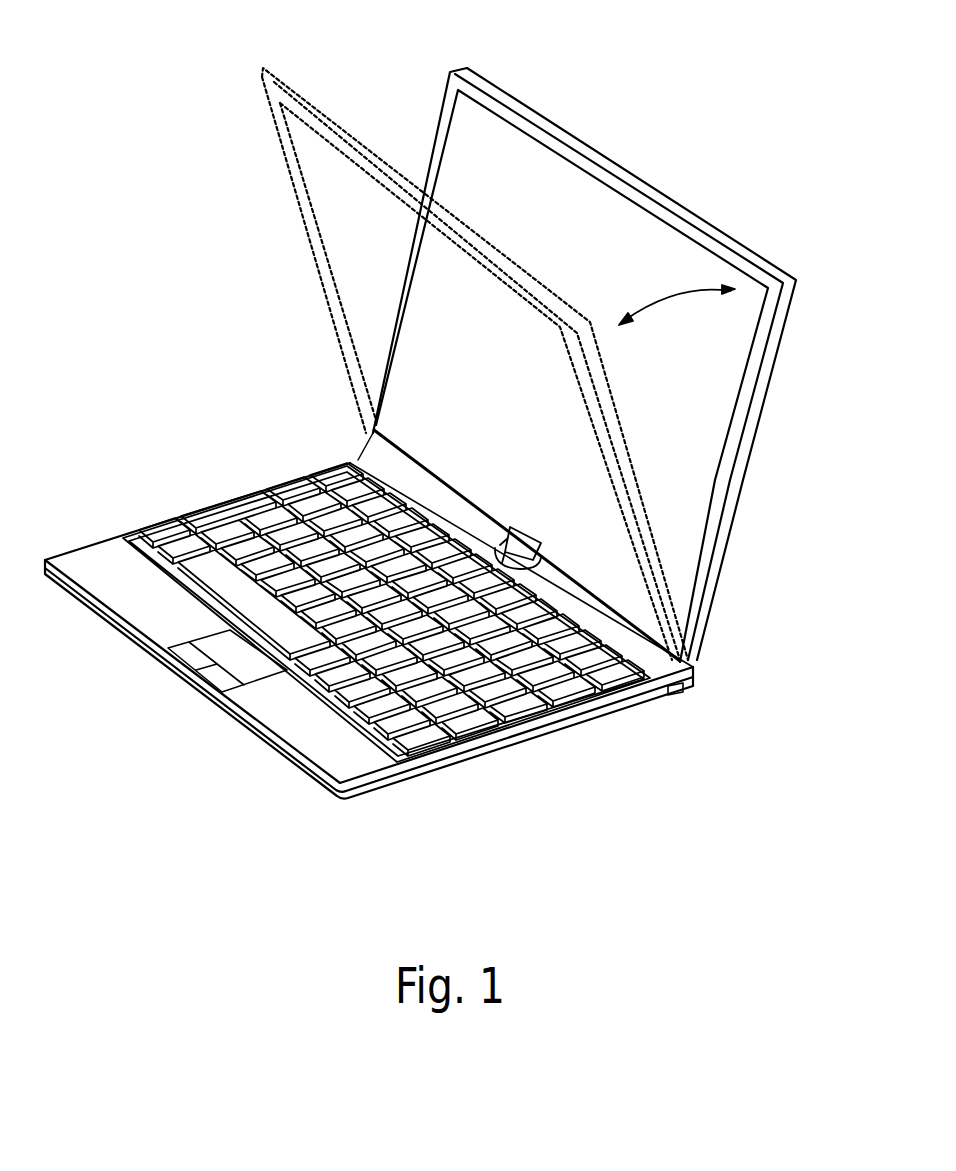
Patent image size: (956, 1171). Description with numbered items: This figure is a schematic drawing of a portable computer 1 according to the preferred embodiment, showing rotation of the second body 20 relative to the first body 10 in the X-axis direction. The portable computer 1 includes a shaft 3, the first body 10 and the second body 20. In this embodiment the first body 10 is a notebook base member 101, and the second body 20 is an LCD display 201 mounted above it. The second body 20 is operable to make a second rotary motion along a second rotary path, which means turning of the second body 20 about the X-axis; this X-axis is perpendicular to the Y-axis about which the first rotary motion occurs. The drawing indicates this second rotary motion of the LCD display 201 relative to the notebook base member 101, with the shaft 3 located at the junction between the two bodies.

The portable computer 1 is at (420, 448).
The first body 10 is at (369, 645).
The notebook base member 101 is at (513, 733).
The second body 20 is at (529, 365).
The LCD display 201 is at (647, 186).
The shaft 3 is at (598, 531).